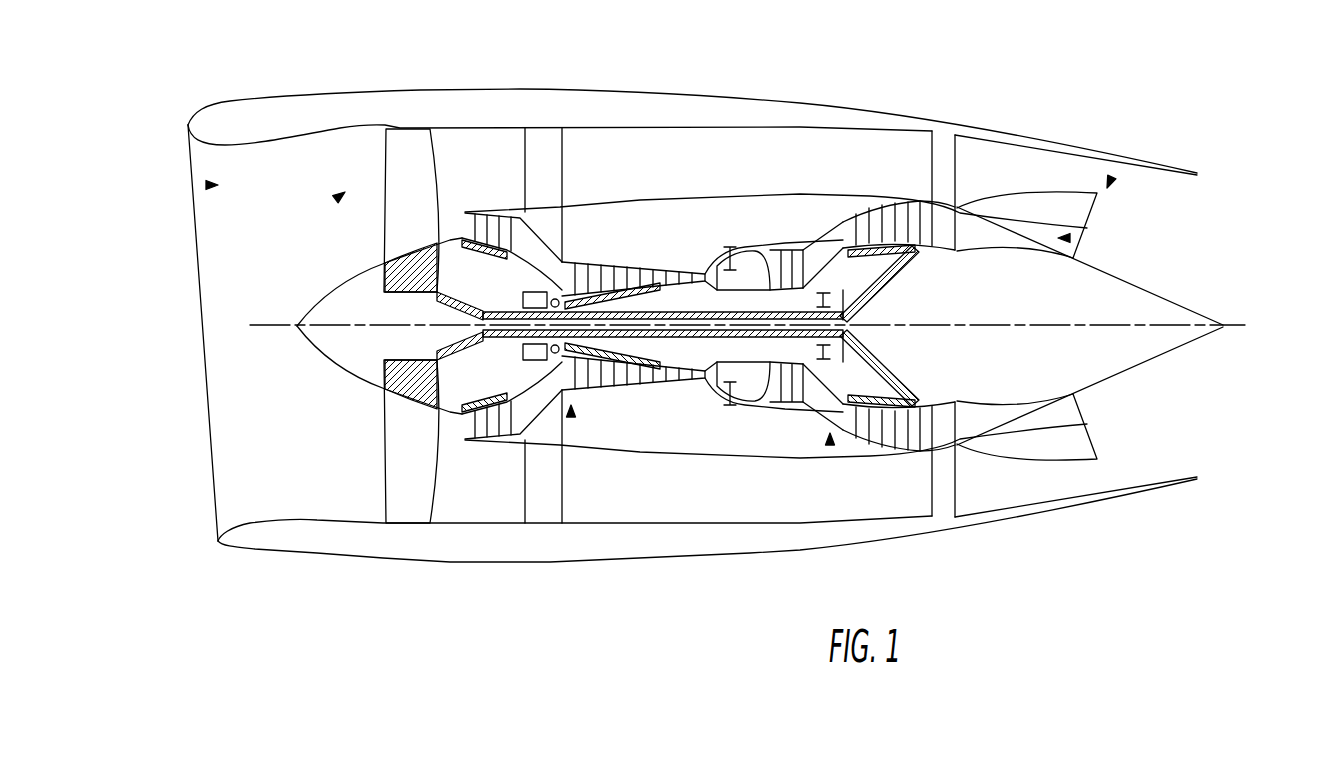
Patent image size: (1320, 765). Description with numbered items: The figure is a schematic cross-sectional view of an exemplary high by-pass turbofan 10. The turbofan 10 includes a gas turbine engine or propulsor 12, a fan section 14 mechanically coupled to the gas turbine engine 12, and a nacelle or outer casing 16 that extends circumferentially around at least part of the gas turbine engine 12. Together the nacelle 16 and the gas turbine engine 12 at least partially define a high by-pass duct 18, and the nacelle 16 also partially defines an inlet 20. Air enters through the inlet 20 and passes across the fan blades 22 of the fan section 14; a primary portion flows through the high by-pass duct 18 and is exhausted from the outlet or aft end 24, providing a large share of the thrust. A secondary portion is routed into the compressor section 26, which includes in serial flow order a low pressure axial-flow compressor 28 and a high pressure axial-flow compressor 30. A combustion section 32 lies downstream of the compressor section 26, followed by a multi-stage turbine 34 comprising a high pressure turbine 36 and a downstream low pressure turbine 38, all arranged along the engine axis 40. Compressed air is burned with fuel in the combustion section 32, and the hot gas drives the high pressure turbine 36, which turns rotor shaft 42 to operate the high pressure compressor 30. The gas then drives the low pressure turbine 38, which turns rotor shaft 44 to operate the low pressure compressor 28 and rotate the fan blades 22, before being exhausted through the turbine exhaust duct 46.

The turbofan 10 is at (928, 88).
The gas turbine engine 12 is at (699, 185).
The fan section 14 is at (336, 198).
The nacelle 16 is at (466, 107).
The high by-pass duct 18 is at (704, 492).
The inlet 20 is at (206, 185).
The fan blades 22 is at (413, 199).
The outlet or aft end 24 is at (1112, 178).
The compressor section 26 is at (573, 417).
The low pressure axial-flow compressor 28 is at (522, 215).
The high pressure axial-flow compressor 30 is at (619, 245).
The combustion section 32 is at (758, 240).
The multi-stage turbine 34 is at (829, 445).
The high pressure turbine 36 is at (805, 231).
The low pressure turbine 38 is at (912, 192).
The engine axis 40 is at (1251, 322).
The rotor shaft 42 is at (735, 350).
The rotor shaft 44 is at (650, 338).
The turbine exhaust duct 46 is at (1070, 238).